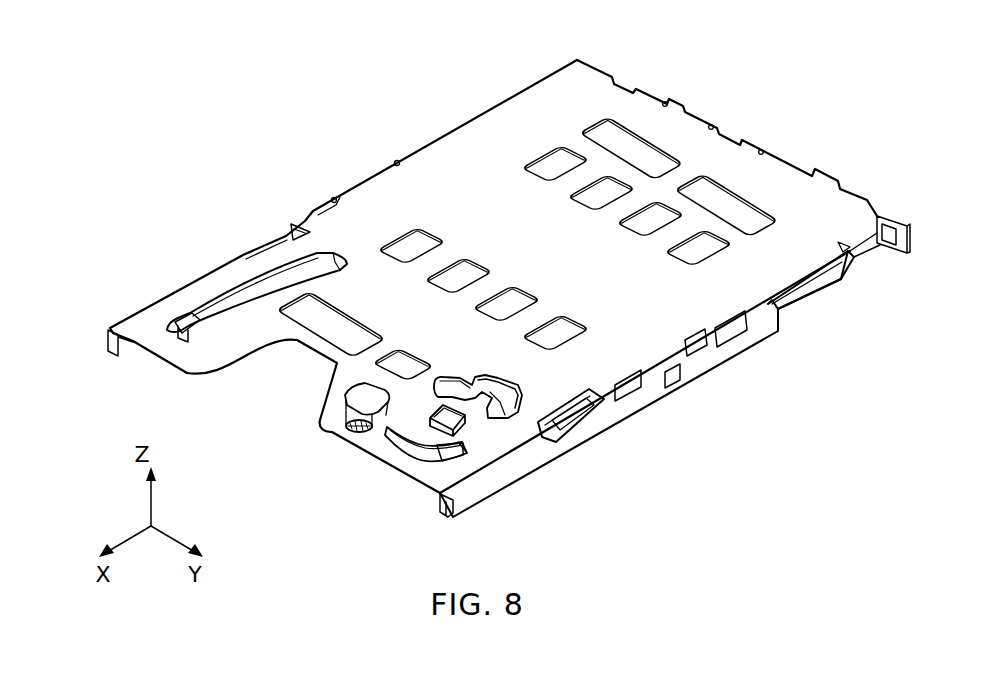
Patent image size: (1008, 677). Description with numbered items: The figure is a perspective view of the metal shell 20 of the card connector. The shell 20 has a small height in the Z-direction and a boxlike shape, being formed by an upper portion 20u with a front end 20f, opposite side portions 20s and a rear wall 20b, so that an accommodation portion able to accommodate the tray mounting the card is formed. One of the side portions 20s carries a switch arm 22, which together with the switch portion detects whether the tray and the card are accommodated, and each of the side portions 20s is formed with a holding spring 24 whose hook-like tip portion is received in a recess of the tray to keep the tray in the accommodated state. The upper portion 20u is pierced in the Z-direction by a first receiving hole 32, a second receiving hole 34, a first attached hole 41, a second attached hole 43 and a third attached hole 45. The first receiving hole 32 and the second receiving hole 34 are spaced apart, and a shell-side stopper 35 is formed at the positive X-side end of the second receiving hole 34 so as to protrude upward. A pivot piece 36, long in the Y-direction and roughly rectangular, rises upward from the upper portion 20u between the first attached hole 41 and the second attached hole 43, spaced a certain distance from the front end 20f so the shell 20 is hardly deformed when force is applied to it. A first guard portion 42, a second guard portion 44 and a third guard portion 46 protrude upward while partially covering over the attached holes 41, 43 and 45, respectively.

The shell 20 is at (761, 129).
The upper portion 20u is at (445, 152).
The rear wall 20b is at (649, 96).
The front end 20f is at (160, 359).
The side portions 20s is at (705, 367).
The switch arm 22 is at (833, 289).
The holding spring 24 is at (588, 430).
The first receiving hole 32 is at (387, 365).
The second receiving hole 34 is at (357, 403).
The shell-side stopper 35 is at (352, 427).
The pivot piece 36 is at (450, 423).
The first attached hole 41 is at (497, 417).
The first guard portion 42 is at (493, 393).
The second attached hole 43 is at (393, 446).
The second guard portion 44 is at (427, 452).
The third attached hole 45 is at (220, 323).
The third guard portion 46 is at (222, 297).